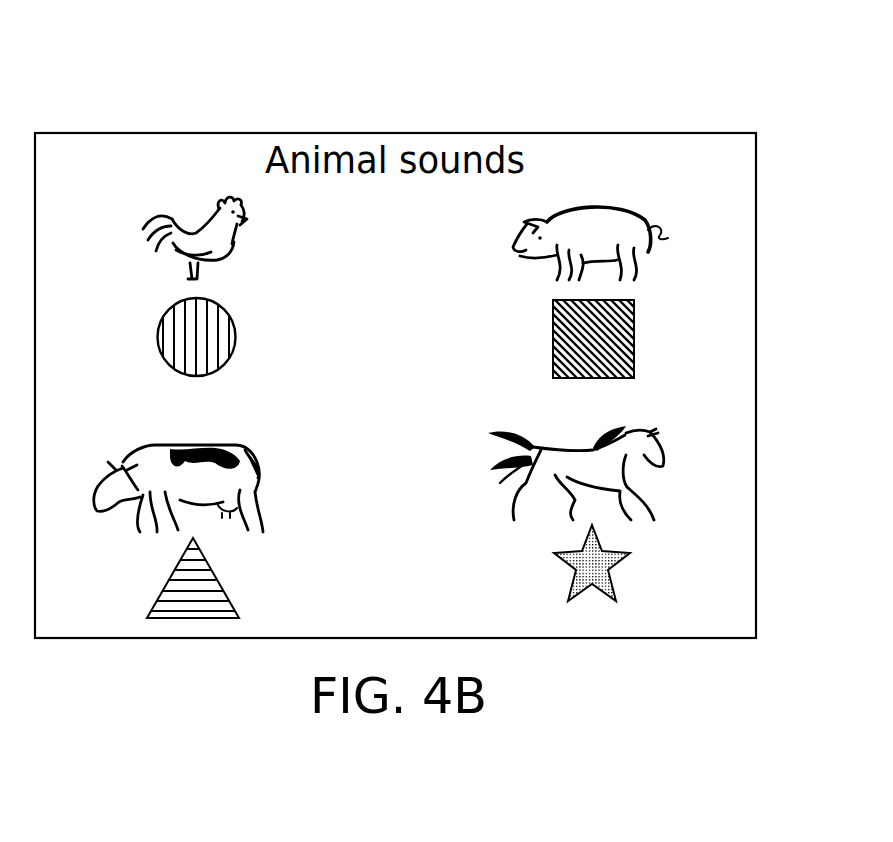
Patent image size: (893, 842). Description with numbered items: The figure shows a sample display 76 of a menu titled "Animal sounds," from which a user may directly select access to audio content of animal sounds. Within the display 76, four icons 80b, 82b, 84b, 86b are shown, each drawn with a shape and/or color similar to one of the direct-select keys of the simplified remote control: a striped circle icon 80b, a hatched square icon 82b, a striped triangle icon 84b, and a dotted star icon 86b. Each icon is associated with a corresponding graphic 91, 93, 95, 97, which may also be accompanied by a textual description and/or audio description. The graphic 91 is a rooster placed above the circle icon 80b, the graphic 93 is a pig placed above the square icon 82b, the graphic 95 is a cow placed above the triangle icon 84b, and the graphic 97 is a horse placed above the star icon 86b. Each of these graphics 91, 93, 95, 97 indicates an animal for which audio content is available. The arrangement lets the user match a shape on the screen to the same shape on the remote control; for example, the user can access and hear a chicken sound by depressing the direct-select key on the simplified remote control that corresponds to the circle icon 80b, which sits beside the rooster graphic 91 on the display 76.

The sample display 76 is at (234, 663).
The graphic 91 is at (232, 241).
The graphic 93 is at (518, 248).
The graphic 95 is at (253, 448).
The graphic 97 is at (542, 446).
The icon 80b is at (158, 337).
The icon 82b is at (635, 343).
The icon 84b is at (160, 595).
The icon 86b is at (618, 587).